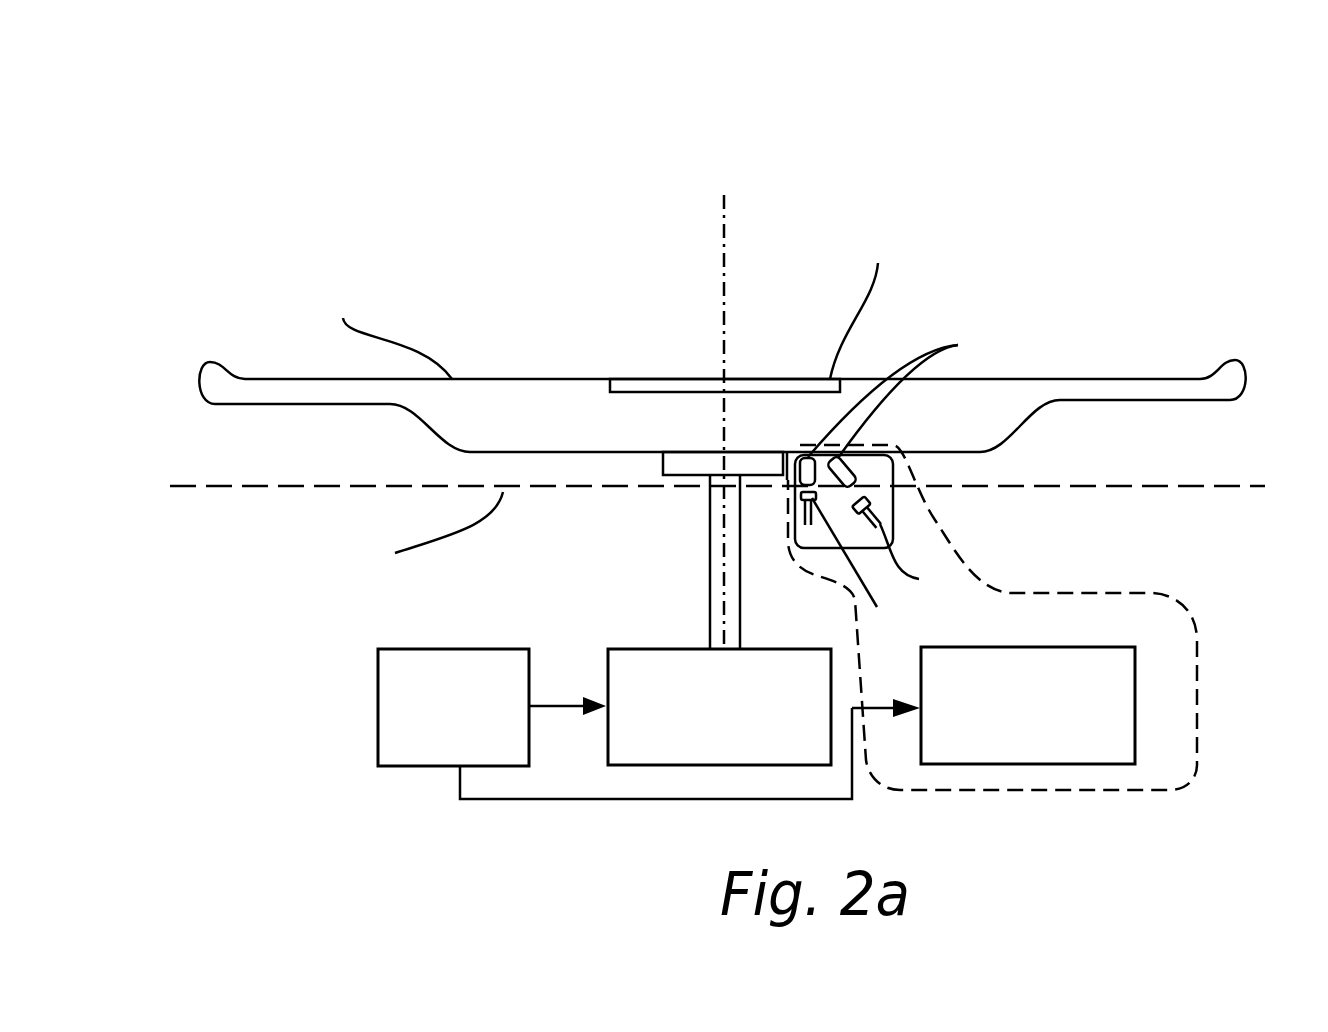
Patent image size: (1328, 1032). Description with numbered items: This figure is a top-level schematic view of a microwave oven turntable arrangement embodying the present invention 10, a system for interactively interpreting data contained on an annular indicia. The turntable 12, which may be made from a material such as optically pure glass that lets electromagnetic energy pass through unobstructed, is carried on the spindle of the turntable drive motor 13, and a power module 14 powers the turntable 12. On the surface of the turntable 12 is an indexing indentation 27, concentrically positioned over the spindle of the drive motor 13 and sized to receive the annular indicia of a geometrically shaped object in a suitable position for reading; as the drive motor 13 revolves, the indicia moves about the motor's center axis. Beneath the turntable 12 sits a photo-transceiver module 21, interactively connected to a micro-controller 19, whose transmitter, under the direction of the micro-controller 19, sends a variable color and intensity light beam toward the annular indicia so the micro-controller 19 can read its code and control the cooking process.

The present invention 10 is at (1145, 184).
The turntable 12 is at (1130, 379).
The indexing indentation 27 is at (660, 379).
The photo-transceiver module 21 is at (897, 522).
The micro-controller 19 is at (1200, 668).
The turntable drive motor 13 is at (653, 648).
The power module 14 is at (503, 648).